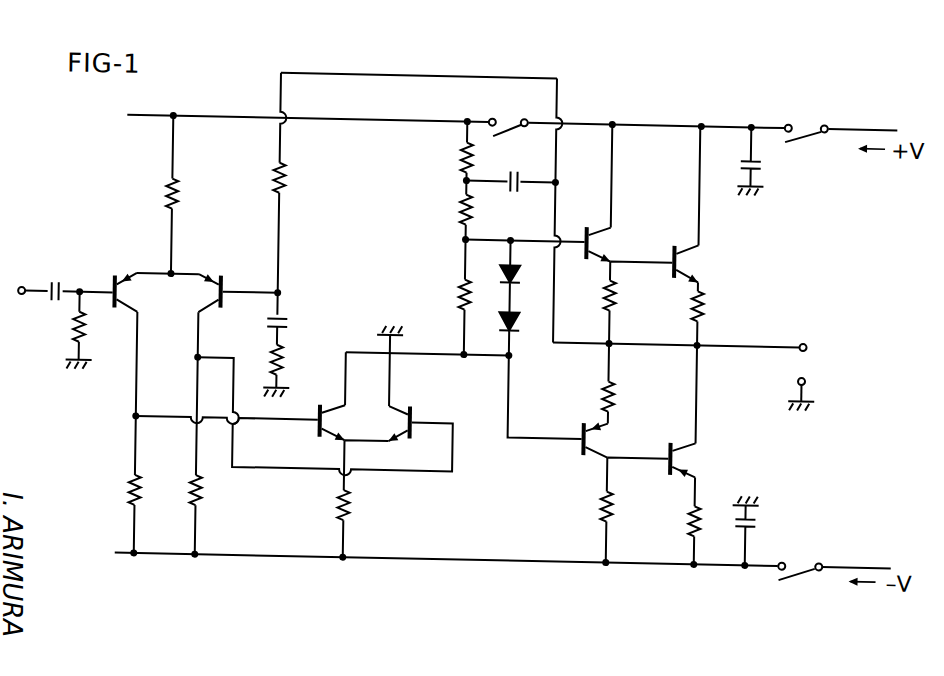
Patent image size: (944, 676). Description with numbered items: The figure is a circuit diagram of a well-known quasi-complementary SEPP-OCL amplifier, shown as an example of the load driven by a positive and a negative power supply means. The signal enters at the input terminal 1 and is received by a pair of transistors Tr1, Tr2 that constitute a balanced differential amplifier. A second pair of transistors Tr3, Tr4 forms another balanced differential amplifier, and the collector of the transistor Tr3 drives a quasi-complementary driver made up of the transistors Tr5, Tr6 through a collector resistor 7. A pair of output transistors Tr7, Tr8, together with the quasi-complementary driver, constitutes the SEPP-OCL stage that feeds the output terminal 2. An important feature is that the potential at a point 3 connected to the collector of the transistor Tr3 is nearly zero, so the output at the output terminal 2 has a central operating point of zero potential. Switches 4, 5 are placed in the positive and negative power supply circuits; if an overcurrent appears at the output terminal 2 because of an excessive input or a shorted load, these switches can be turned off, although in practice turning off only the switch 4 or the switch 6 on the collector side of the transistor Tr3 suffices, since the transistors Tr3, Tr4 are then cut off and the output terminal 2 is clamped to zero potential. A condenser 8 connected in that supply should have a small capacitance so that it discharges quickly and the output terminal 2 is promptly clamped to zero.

The input terminal 1 is at (31, 278).
The output terminal 2 is at (680, 332).
The point 3 is at (441, 346).
The switch 4 is at (806, 146).
The switch 5 is at (800, 559).
The switch 6 is at (509, 113).
The collector resistor 7 is at (459, 284).
The condenser 8 is at (737, 161).
The transistor Tr1 is at (139, 292).
The transistor Tr2 is at (193, 292).
The transistor Tr3 is at (311, 427).
The transistor Tr4 is at (418, 419).
The transistor Tr5 is at (616, 246).
The transistor Tr6 is at (613, 440).
The output transistor Tr7 is at (707, 266).
The output transistor Tr8 is at (700, 460).